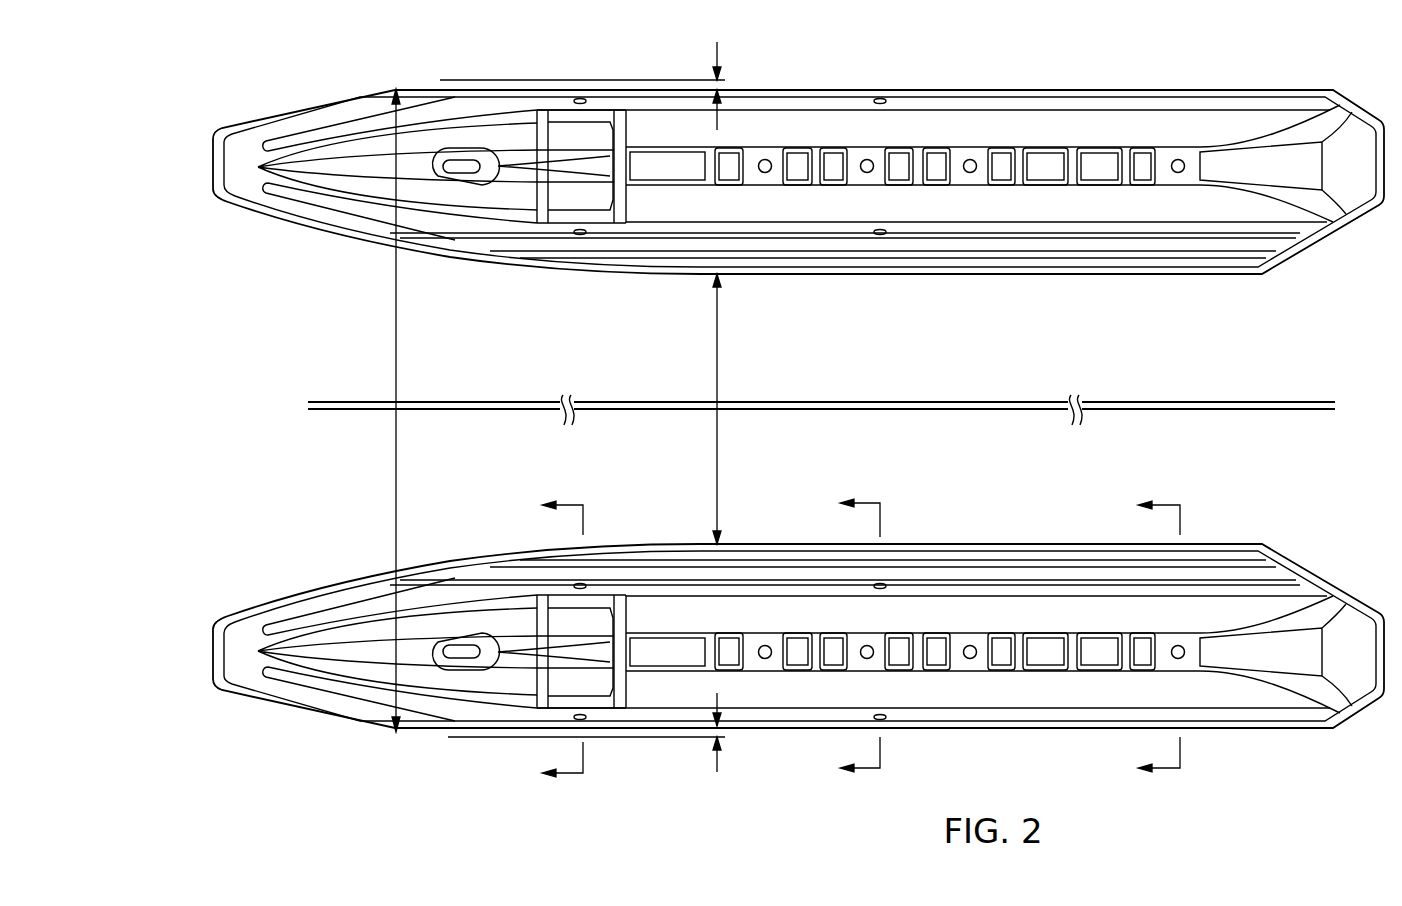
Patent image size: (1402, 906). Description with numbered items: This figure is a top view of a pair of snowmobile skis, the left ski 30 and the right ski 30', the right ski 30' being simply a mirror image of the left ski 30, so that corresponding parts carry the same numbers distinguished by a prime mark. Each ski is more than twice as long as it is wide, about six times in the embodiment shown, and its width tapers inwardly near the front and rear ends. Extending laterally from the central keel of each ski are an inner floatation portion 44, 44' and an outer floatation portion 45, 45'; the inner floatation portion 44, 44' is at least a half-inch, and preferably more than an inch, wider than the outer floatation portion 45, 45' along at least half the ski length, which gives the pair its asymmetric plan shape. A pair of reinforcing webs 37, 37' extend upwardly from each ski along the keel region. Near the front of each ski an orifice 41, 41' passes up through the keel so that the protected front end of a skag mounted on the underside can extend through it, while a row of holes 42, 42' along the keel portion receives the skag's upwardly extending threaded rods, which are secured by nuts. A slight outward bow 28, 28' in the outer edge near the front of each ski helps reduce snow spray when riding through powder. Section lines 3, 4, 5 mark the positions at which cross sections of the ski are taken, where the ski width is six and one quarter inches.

The outward bow 28 is at (798, 668).
The outward bow 28' is at (798, 158).
The left ski 30 is at (798, 641).
The right ski 30' is at (798, 175).
The reinforcing webs 37 is at (914, 651).
The reinforcing webs 37' is at (914, 165).
The orifice 41 is at (470, 592).
The orifice 41' is at (478, 107).
The holes 42 is at (994, 628).
The holes 42' is at (999, 143).
The inner floatation portion 44 is at (845, 534).
The inner floatation portion 44' is at (845, 273).
The outer floatation portion 45 is at (1276, 691).
The outer floatation portion 45' is at (1276, 133).
The section line 3- 3 is at (1173, 636).
The section line 4- 4 is at (875, 637).
The section line 5- 5 is at (578, 641).